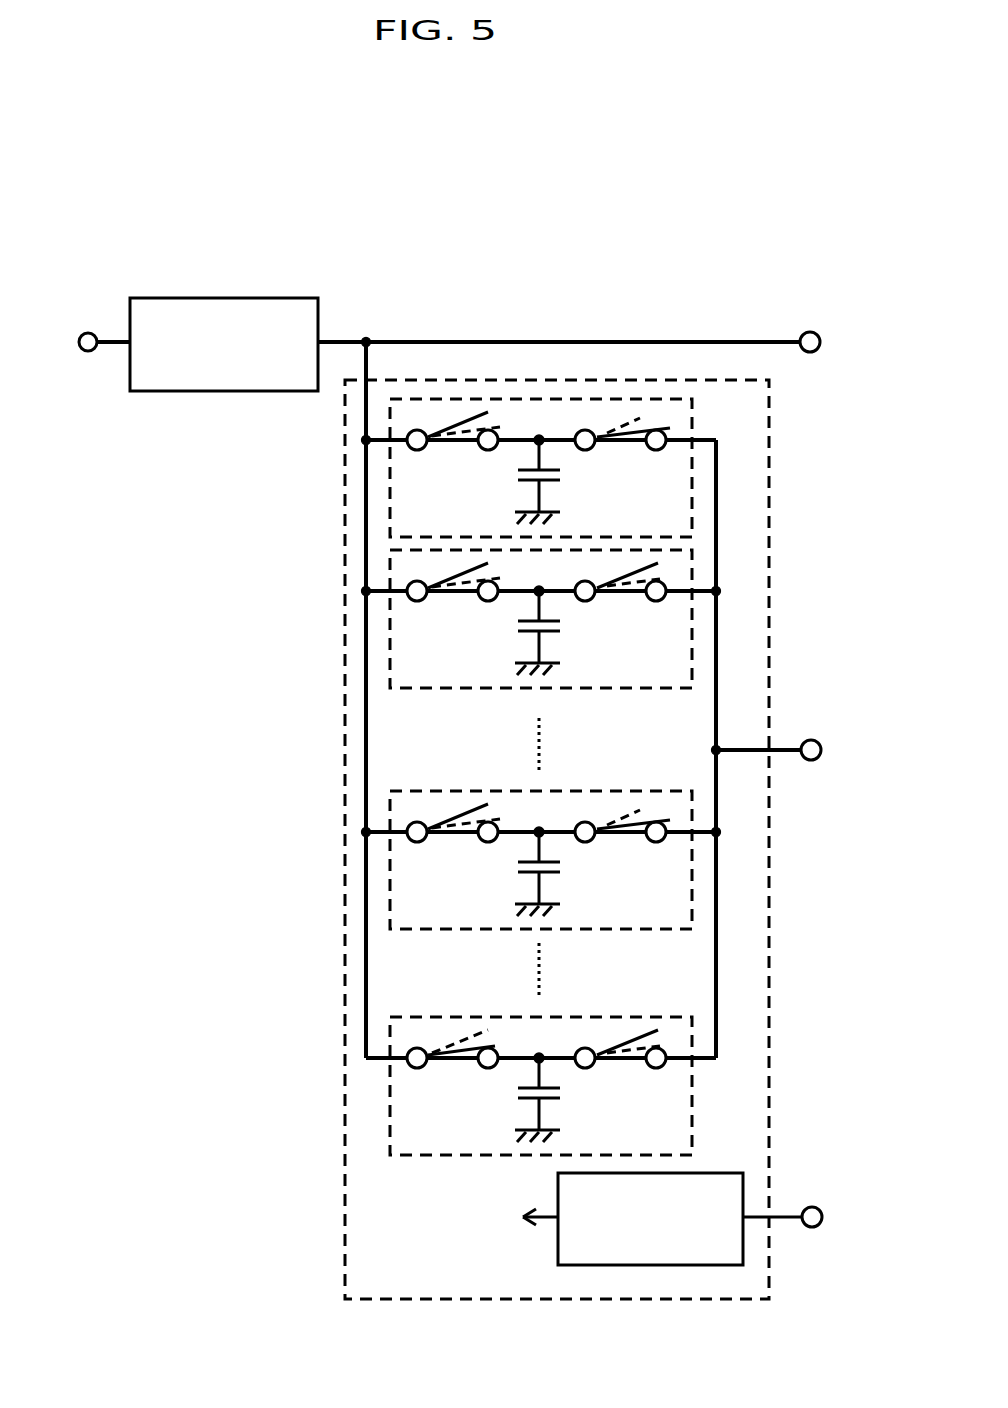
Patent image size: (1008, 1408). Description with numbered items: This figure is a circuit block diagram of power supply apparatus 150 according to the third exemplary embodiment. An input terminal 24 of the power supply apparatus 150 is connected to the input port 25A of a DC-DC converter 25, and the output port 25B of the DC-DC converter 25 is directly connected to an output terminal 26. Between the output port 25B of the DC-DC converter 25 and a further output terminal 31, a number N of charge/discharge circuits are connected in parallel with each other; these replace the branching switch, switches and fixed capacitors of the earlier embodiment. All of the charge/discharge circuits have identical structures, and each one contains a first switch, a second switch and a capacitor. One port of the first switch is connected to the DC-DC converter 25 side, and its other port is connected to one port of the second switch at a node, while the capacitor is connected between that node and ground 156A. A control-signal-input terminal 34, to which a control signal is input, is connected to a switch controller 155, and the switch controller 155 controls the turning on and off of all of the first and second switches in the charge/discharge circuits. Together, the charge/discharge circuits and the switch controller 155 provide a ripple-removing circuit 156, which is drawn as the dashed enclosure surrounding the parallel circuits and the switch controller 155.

The input terminal 24 is at (83, 330).
The DC-DC converter 25 is at (203, 298).
The input port 25A is at (122, 348).
The output port 25B is at (332, 335).
The output terminal 26 is at (818, 328).
The output terminal 31 is at (808, 738).
The control-signal-input terminal 34 is at (815, 1207).
The power supply apparatus 150 is at (722, 310).
The switch controller 155 is at (663, 1265).
The ripple-removing circuit 156 is at (769, 920).
The ground 156A is at (580, 887).